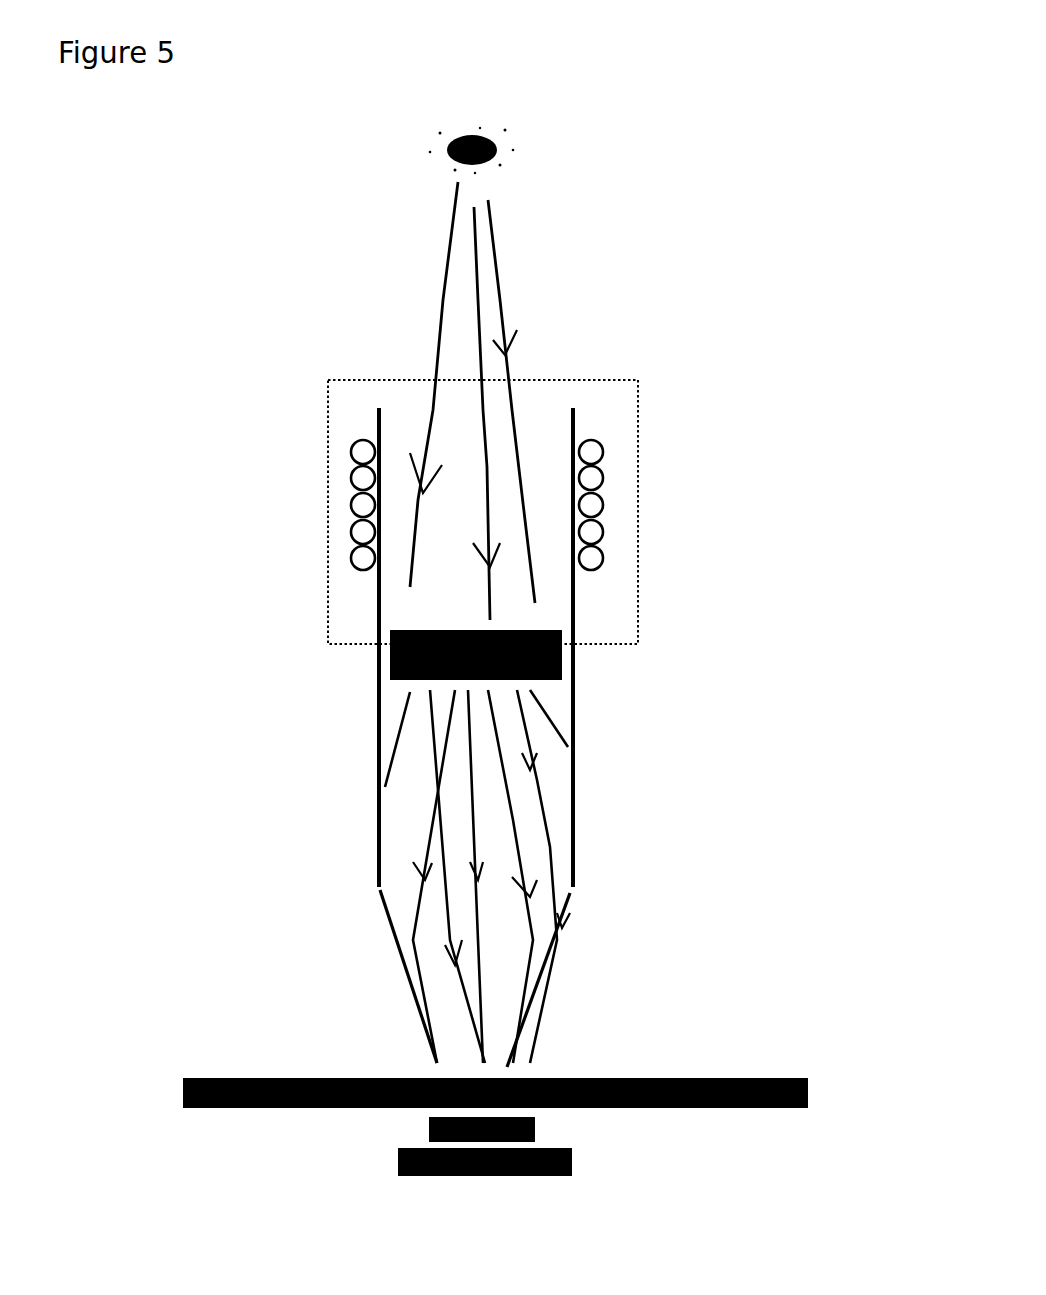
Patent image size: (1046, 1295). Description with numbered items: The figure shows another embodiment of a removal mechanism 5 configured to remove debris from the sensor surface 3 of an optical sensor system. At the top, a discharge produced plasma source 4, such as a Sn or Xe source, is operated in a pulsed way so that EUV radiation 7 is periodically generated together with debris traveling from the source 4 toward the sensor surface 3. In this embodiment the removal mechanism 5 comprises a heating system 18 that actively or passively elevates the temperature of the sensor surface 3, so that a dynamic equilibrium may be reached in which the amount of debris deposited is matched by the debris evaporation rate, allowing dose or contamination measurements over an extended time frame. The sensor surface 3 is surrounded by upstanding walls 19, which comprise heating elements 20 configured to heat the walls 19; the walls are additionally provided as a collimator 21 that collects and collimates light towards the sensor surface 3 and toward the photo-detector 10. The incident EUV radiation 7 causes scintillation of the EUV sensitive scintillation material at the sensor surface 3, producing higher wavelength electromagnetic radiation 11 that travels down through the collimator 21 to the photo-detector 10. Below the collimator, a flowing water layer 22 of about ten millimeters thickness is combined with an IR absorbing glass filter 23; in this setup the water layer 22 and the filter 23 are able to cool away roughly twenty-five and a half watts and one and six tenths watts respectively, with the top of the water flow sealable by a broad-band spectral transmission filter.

The sensor surface 3 is at (455, 620).
The discharge produced plasma source 4 is at (513, 150).
The removal mechanism 5 is at (672, 410).
The EUV radiation 7 is at (452, 398).
The photo-detector 10 is at (578, 1203).
The electromagnetic radiation 11 is at (487, 856).
The heating system 18 is at (483, 512).
The upstanding walls 19 is at (575, 600).
The heating elements 20 is at (602, 500).
The collimator 21 is at (560, 928).
The flowing water layer 22 is at (737, 1080).
The IR absorbing glass filter 23 is at (535, 1133).